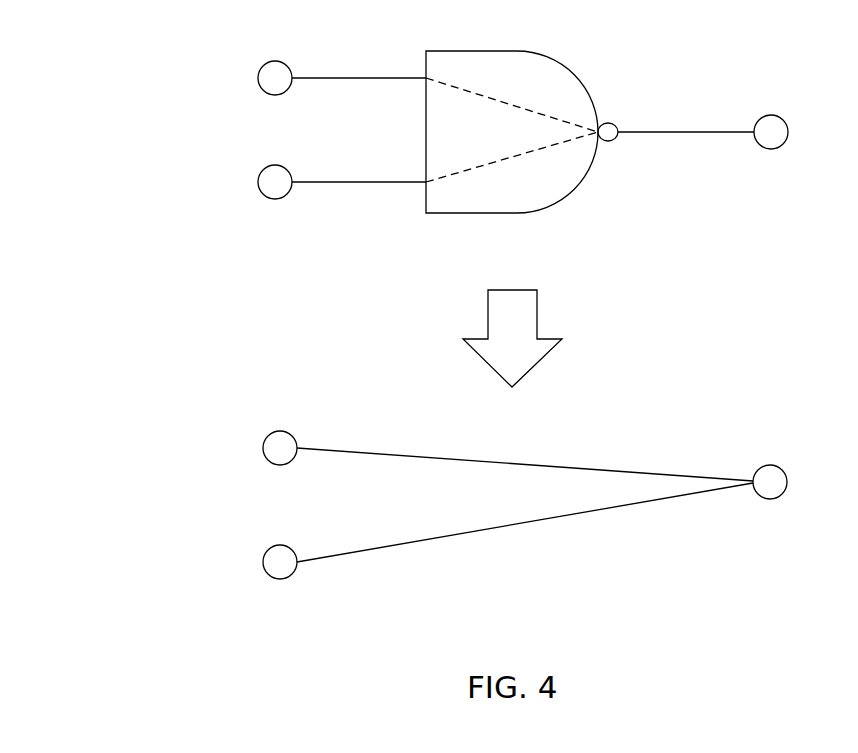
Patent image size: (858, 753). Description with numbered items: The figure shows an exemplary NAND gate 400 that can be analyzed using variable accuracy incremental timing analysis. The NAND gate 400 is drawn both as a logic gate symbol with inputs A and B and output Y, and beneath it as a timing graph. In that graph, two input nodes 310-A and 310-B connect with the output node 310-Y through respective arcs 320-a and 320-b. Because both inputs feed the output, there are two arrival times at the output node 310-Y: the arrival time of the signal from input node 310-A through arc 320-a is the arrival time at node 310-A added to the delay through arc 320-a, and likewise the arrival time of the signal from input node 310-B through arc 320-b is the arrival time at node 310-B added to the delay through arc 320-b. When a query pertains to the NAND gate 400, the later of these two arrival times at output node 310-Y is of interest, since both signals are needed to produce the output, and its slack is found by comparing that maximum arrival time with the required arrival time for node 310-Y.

The NAND gate 400 is at (150, 52).
The input node 310-A is at (304, 432).
The input node 310-B is at (304, 544).
The output node 310-Y is at (793, 465).
The arc 320-a is at (525, 450).
The arc 320-b is at (525, 537).